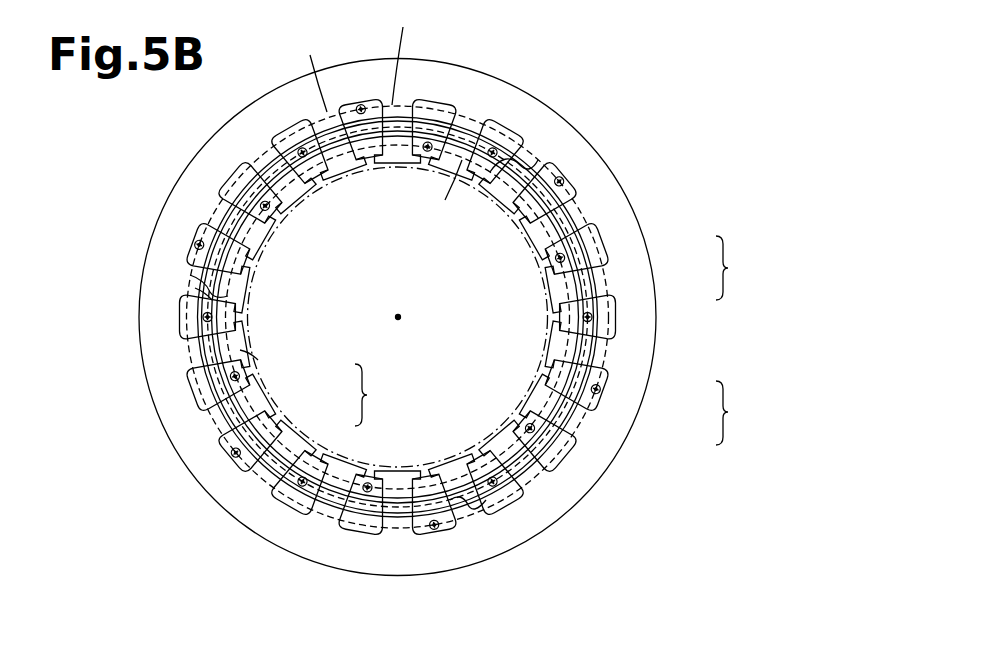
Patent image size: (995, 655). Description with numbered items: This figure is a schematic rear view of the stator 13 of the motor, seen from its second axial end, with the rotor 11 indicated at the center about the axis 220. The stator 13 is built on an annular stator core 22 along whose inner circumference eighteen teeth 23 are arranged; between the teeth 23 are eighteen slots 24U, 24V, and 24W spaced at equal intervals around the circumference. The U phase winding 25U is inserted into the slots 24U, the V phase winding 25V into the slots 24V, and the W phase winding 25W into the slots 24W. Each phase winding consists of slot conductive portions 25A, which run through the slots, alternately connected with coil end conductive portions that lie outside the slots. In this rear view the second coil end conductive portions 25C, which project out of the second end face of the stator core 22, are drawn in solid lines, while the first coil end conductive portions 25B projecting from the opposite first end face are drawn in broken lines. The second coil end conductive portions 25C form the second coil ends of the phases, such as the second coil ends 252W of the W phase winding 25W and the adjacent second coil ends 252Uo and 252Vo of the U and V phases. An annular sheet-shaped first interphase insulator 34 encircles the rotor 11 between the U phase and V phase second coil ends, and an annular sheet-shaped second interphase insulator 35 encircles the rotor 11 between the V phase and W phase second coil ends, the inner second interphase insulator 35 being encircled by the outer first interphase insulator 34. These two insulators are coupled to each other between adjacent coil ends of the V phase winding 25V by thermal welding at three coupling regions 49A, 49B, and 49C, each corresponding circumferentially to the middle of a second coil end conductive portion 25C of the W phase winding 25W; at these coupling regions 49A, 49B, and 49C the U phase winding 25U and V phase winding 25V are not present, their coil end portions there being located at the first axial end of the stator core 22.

The stator 13 is at (562, 45).
The stator core 22 is at (606, 188).
The teeth 23 is at (516, 200).
The rotor 11 is at (400, 468).
The rotation axis 220 is at (402, 317).
The slot 24U is at (372, 100).
The slot 24V is at (297, 135).
The slot 24W is at (424, 100).
The slot conductive portion 25A is at (600, 300).
The first coil end conductive portion 25B is at (613, 262).
The second coil end conductive portion 25C is at (620, 325).
The U phase winding 25U is at (744, 413).
The V phase winding 25V is at (744, 268).
The W phase winding 25W is at (383, 395).
The second coil end 252Uo is at (311, 71).
The second coil end 252Vo is at (409, 52).
The second coil end 252W is at (445, 190).
The coupling region 49A is at (525, 165).
The coupling region 49B is at (468, 500).
The coupling region 49C is at (200, 290).
The first interphase insulator 34 is at (198, 292).
The second interphase insulator 35 is at (250, 354).